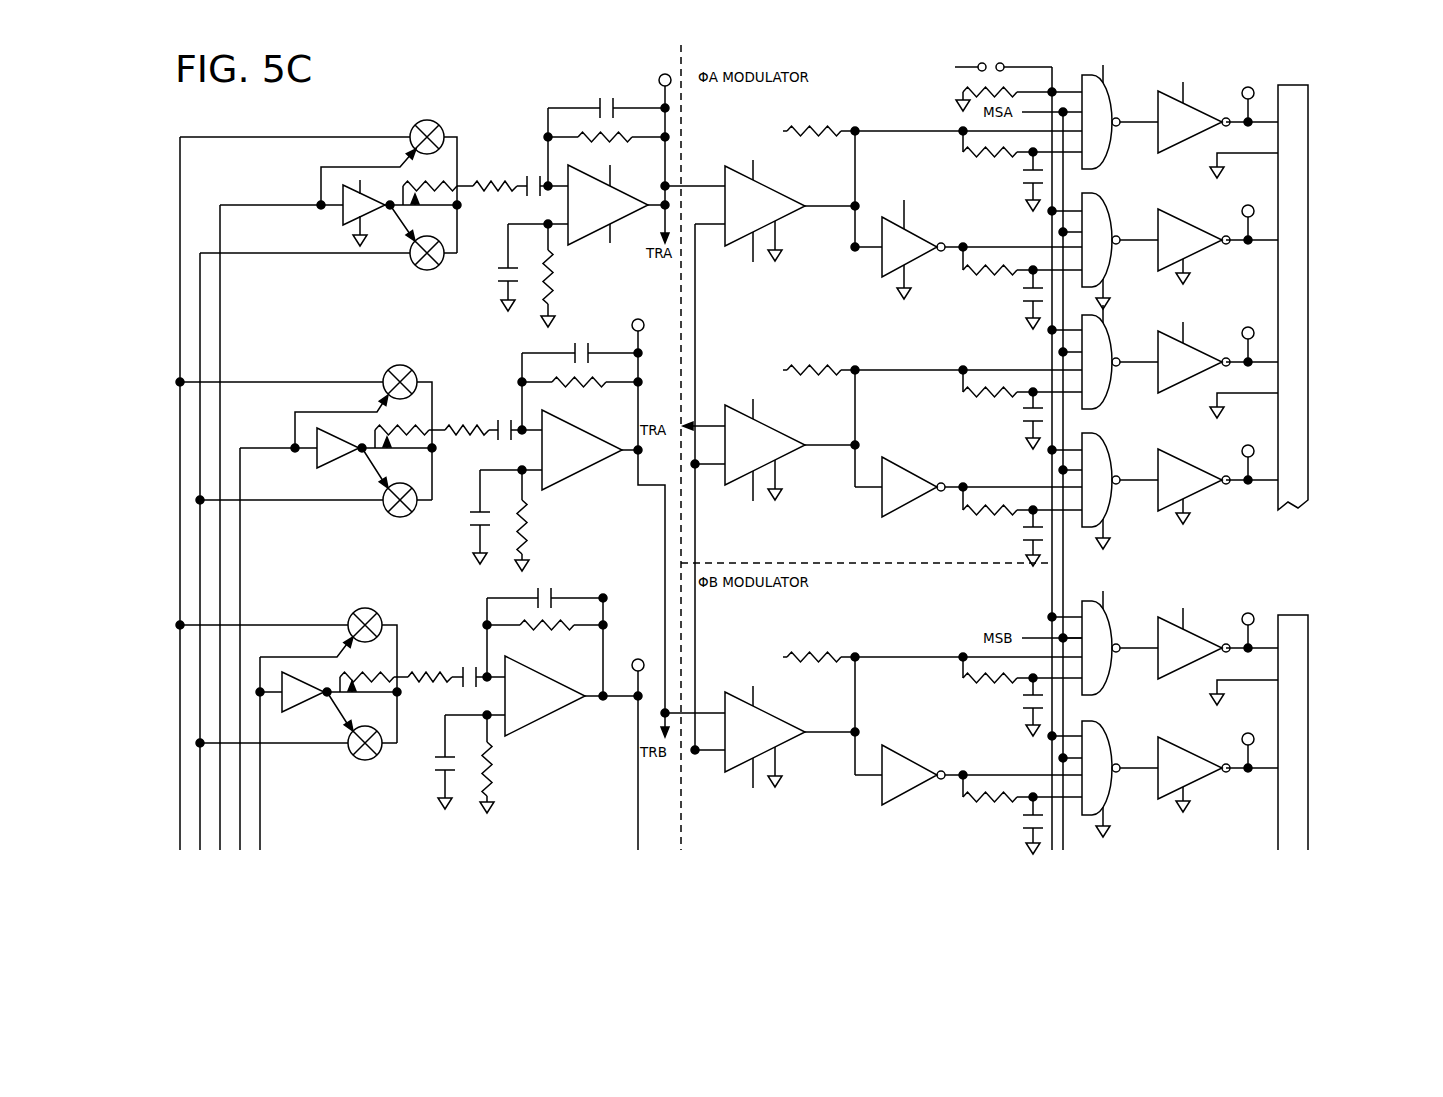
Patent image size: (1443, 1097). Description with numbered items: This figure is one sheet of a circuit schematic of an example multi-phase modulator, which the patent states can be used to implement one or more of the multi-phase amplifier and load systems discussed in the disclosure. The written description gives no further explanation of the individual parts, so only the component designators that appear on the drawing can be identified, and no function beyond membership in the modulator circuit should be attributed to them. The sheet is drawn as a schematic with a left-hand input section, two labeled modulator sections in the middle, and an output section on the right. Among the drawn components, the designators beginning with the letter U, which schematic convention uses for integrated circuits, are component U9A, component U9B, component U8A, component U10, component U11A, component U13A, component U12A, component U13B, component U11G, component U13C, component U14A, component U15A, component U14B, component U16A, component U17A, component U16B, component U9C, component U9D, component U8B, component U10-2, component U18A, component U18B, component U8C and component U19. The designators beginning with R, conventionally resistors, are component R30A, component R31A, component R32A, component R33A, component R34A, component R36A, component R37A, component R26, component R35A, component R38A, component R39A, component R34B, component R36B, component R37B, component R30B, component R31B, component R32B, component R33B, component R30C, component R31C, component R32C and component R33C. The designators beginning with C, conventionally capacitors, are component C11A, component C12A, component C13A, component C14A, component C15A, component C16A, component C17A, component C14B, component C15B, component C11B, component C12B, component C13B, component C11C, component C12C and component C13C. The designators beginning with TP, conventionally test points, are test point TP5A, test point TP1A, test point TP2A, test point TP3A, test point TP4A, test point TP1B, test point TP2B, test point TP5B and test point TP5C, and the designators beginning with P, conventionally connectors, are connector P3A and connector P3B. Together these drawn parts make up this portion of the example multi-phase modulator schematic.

The analog switch U9A is at (318, 179).
The analog switch U9B is at (331, 254).
The buffer U8A is at (340, 196).
The potentiometer R30A 4.99K R30A is at (430, 185).
The resistor R31A 4.99K R31A is at (492, 188).
The capacitor C11A .1 C11A is at (543, 187).
The operational amplifier U10 412 U10 is at (639, 209).
The resistor R32A 510K R32A is at (606, 147).
The capacitor C12A .001 C12A is at (608, 103).
The test point TP5A / TR1-A TP5A is at (643, 70).
The capacitor C13A .001 C13A is at (515, 265).
The resistor R33A 510K R33A is at (567, 275).
The comparator U11A 311 U11A is at (777, 211).
The resistor R34A 2.49K R34A is at (921, 132).
The resistor R36A 2.49K R36A is at (1000, 154).
The capacitor C14A 33 C14A is at (988, 181).
The inverter U13A 04 U13A is at (966, 241).
The resistor R37A 4.99K R37A is at (1000, 271).
The capacitor C15A 33 C15A is at (988, 299).
The resistor R26 10K with P6 GATE R26 is at (1009, 78).
The comparator U12A 311 U12A is at (772, 450).
The resistor R35A 2.49K R35A is at (921, 371).
The resistor R38A 2.49K R38A is at (1000, 393).
The capacitor C16A 33 C16A is at (988, 420).
The inverter U13B is at (968, 487).
The resistor R39A 4.99K R39A is at (1000, 511).
The capacitor C17A 33 C17A is at (988, 538).
The comparator U11G 311 U11G is at (760, 737).
The resistor R34B 2.49K R34B is at (921, 658).
The resistor R36B 2.49K R36B is at (1000, 680).
The capacitor C14B 33 C14B is at (988, 707).
The inverter U13C is at (968, 775).
The resistor R37B 4.99K R37B is at (1000, 798).
The capacitor C15B 33 C15B is at (988, 825).
The NAND gates U14A 20 U14A is at (1111, 179).
The NAND gates U15A 20 U15A is at (1111, 419).
The NAND gates U14B 20 U14B is at (1111, 706).
The drivers U16A 426 U16A is at (1213, 174).
The drivers U17A 426 U17A is at (1213, 414).
The drivers U16B 426 U16B is at (1213, 701).
The test point TP1A is at (1245, 95).
The test point TP2A is at (1245, 213).
The test point TP3A is at (1245, 335).
The test point TP4A is at (1245, 453).
The test point TP1B is at (1244, 621).
The test point TP2B is at (1244, 741).
The connector P3A is at (1289, 288).
The connector P3B is at (1288, 723).
The analog switch U9C is at (306, 423).
The analog switch U9D is at (317, 498).
The buffer U8B is at (338, 441).
The potentiometer R30B is at (402, 428).
The resistor R31B 4.99K R31B is at (463, 432).
The capacitor C11B .1 C11B is at (516, 431).
The operational amplifier U10 412 (second) U10-2 is at (585, 450).
The resistor R32B 510K R32B is at (580, 391).
The capacitor C12B .001 C12B is at (582, 348).
The test point TP5B / TR1-B TP5B is at (624, 317).
The capacitor C13B .001 C13B is at (488, 515).
The resistor R33B 510K R33B is at (540, 520).
The analog switch U18A is at (288, 667).
The analog switch U18B is at (300, 744).
The buffer U8C is at (330, 702).
The potentiometer R30C is at (367, 674).
The resistor R31C 4.99K R31C is at (428, 677).
The capacitor C11C .1 C11C is at (479, 674).
The operational amplifier U19 412 U19 is at (567, 696).
The resistor R32C 510K R32C is at (545, 647).
The capacitor C12C .001 C12C is at (547, 593).
The test point TP5C / TR1-C TP5C is at (660, 645).
The capacitor C13C .001 C13C is at (452, 760).
The resistor R33C 510K R33C is at (505, 764).